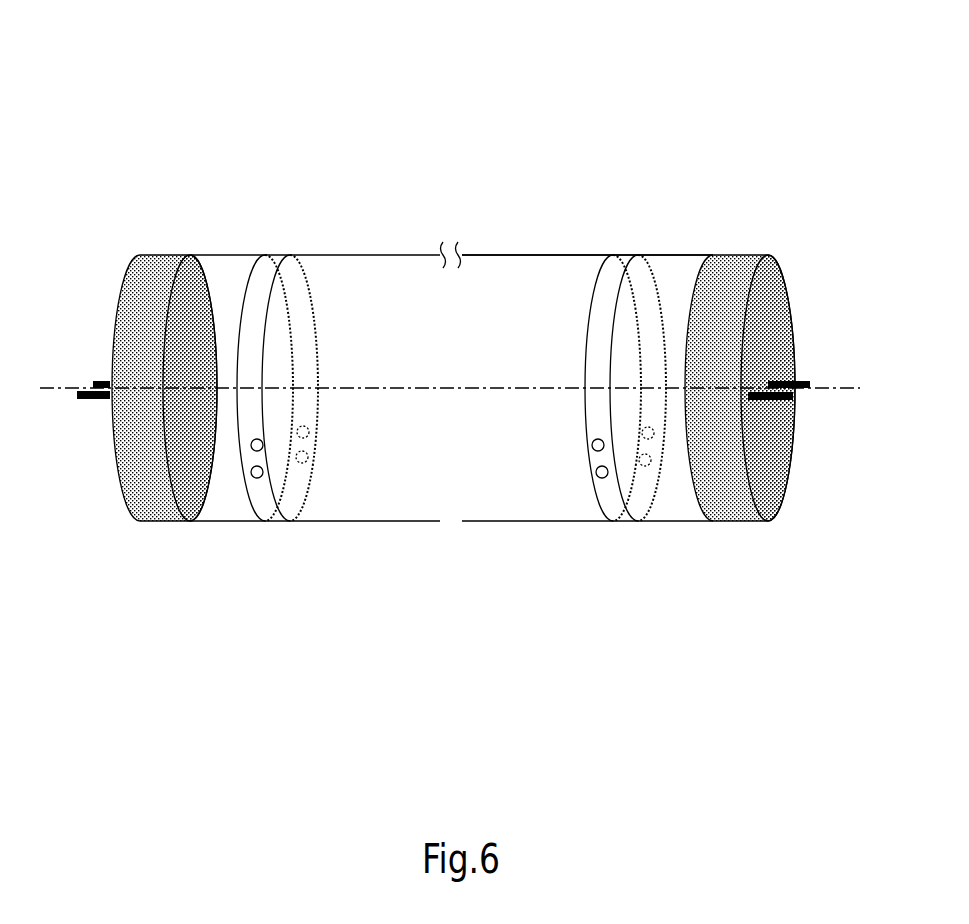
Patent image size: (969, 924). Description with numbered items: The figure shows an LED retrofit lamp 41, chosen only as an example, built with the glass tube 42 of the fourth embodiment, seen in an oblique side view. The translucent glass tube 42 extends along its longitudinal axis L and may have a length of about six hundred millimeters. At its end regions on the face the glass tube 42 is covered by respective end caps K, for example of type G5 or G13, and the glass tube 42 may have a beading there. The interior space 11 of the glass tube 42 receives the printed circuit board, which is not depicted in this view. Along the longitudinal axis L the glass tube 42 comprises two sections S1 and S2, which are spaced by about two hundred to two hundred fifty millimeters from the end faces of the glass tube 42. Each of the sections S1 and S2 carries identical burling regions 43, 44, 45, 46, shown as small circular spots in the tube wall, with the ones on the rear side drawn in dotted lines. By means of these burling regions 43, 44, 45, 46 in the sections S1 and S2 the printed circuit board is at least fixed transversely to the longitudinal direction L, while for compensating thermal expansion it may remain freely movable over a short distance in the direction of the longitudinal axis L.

The LED retrofit lamp 41 is at (210, 98).
The glass tube 42 is at (378, 255).
The interior space 11 is at (497, 272).
The burling region 43 is at (309, 432).
The burling region 44 is at (308, 456).
The burling region 45 is at (252, 451).
The burling region 46 is at (258, 478).
The section S1 is at (294, 243).
The section S2 is at (640, 243).
The end cap K is at (160, 522).
The longitudinal axis L is at (825, 388).